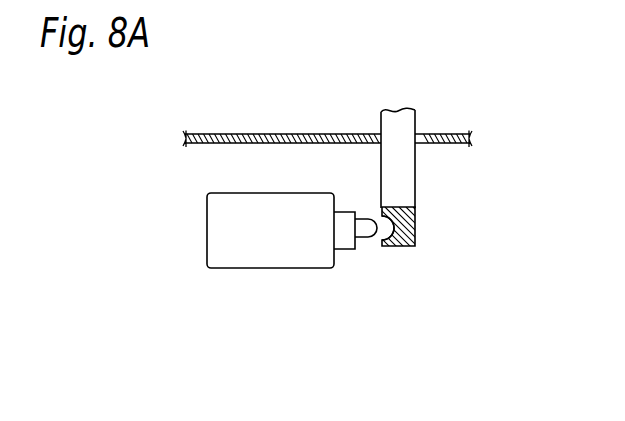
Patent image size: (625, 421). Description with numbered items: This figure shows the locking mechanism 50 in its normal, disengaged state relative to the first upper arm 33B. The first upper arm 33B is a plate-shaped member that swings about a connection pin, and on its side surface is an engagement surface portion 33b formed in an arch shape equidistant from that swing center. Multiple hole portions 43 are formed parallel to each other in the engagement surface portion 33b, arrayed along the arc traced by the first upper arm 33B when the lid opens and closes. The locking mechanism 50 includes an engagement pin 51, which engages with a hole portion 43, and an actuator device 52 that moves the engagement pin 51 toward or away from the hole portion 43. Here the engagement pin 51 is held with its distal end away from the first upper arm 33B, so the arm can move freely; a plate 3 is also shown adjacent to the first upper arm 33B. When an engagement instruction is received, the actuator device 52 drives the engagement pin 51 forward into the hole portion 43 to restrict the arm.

The plate 3 is at (235, 177).
The first upper arm 33B is at (405, 181).
The engagement surface portion 33b is at (378, 209).
The hole portion 43 is at (380, 240).
The locking mechanism 50 is at (218, 295).
The engagement pin 51 is at (362, 233).
The actuator device 52 is at (281, 243).